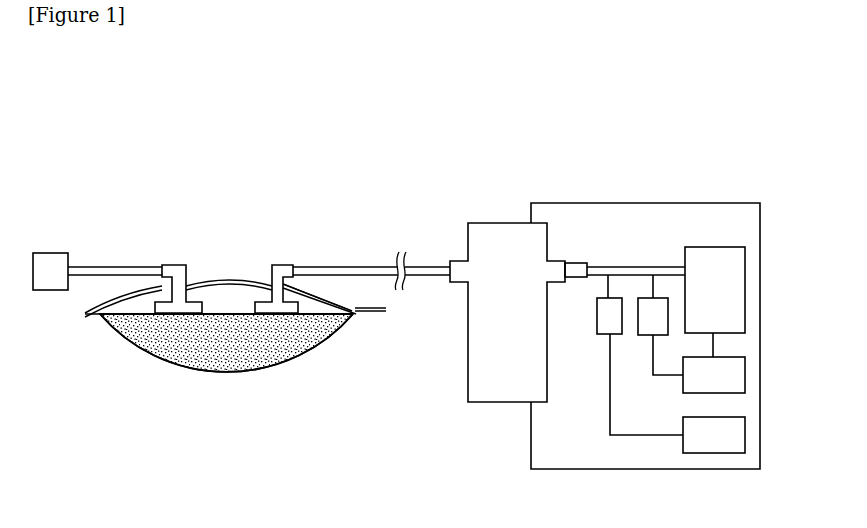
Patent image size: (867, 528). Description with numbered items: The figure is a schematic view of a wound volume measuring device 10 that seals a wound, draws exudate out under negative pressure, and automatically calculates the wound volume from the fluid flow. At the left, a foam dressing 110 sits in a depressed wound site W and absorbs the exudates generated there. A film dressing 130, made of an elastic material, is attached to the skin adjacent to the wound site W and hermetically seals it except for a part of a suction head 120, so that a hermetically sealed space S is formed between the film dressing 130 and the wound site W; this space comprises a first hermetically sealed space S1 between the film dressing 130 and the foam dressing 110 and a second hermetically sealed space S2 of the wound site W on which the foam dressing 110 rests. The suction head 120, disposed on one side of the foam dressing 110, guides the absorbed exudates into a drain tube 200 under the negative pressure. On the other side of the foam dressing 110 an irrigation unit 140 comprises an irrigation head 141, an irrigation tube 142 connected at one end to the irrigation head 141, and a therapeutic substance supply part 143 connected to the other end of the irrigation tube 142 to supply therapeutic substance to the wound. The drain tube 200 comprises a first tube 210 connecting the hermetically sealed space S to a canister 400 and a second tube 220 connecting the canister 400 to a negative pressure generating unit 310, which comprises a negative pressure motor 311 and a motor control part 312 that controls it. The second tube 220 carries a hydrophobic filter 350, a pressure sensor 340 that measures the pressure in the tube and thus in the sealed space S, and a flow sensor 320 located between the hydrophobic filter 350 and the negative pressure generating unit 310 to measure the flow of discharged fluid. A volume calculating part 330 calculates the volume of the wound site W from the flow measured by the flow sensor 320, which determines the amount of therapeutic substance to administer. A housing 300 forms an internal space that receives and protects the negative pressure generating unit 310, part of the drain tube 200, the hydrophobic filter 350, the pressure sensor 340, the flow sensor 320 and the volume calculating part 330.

The wound volume measuring device 10 is at (440, 77).
The wound site W is at (177, 368).
The foam dressing 110 is at (238, 372).
The suction head 120 is at (300, 307).
The film dressing 130 is at (230, 279).
The irrigation unit 140 is at (53, 205).
The irrigation head 141 is at (172, 265).
The irrigation tube 142 is at (115, 267).
The therapeutic substance supply part 143 is at (52, 254).
The drain tube 200 is at (610, 153).
The first tube 210 is at (430, 267).
The second tube 220 is at (635, 267).
The housing 300 is at (760, 203).
The negative pressure generating unit 310 is at (795, 250).
The negative pressure motor 311 is at (745, 248).
The motor control part 312 is at (745, 358).
The flow sensor 320 is at (598, 335).
The volume calculating part 330 is at (745, 418).
The pressure sensor 340 is at (658, 298).
The hydrophobic filter 350 is at (575, 263).
The canister 400 is at (468, 402).
The hermetically sealed space S is at (412, 312).
The first hermetically sealed space S1 is at (310, 304).
The second hermetically sealed space S2 is at (306, 335).